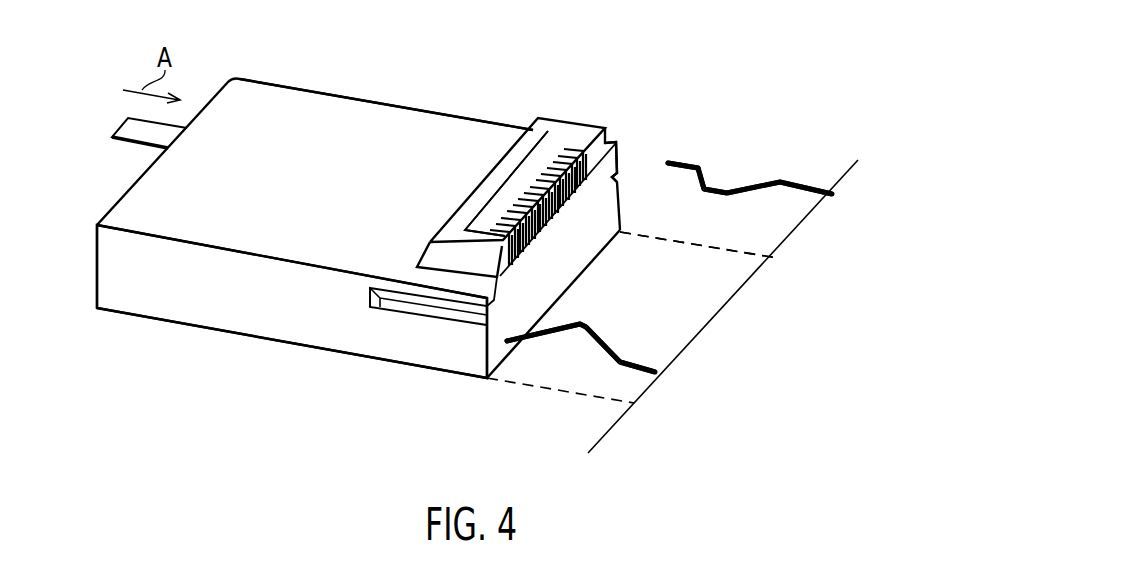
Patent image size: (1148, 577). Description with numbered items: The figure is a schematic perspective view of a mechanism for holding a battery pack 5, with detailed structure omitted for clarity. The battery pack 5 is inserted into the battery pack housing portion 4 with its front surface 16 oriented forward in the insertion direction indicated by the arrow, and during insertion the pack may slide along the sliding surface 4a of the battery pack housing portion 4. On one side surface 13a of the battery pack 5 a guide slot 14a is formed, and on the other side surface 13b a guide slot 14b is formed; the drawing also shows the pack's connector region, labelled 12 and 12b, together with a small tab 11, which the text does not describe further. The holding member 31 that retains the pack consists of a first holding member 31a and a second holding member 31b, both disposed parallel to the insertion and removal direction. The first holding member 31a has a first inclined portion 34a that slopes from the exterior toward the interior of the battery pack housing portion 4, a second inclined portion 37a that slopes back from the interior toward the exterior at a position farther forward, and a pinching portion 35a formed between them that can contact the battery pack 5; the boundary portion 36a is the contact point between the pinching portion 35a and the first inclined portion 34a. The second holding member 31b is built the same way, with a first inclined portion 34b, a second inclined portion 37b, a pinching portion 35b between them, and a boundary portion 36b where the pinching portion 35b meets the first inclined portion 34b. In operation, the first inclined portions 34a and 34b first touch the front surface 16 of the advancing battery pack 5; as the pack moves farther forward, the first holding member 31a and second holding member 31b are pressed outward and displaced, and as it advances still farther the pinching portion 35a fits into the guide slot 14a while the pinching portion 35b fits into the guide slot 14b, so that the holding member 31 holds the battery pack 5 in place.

The battery pack housing portion 4 is at (677, 277).
The sliding surface 4a is at (634, 278).
The battery pack 5 is at (293, 123).
The fixing tab 11 is at (134, 141).
The connector 12 is at (523, 172).
The connector housing 12b is at (560, 150).
The side surface 13a is at (238, 299).
The side surface 13b is at (378, 101).
The guide slot 14a is at (452, 308).
The guide slot 14b is at (615, 179).
The front surface 16 is at (558, 236).
The holding member 31 is at (664, 279).
The first holding member 31a is at (635, 380).
The second holding member 31b is at (765, 204).
The first inclined portion 34a is at (548, 343).
The first inclined portion 34b is at (695, 160).
The pinching portion 35a is at (590, 330).
The pinching portion 35b is at (718, 186).
The boundary portion 36a is at (578, 338).
The boundary portion 36b is at (708, 172).
The second inclined portion 37a is at (612, 358).
The second inclined portion 37b is at (765, 179).